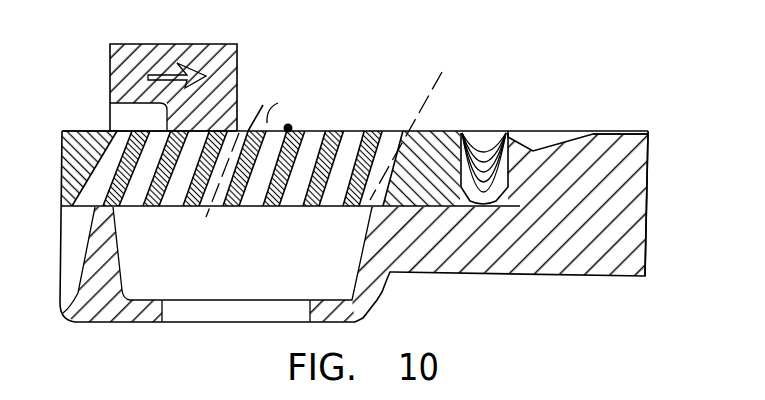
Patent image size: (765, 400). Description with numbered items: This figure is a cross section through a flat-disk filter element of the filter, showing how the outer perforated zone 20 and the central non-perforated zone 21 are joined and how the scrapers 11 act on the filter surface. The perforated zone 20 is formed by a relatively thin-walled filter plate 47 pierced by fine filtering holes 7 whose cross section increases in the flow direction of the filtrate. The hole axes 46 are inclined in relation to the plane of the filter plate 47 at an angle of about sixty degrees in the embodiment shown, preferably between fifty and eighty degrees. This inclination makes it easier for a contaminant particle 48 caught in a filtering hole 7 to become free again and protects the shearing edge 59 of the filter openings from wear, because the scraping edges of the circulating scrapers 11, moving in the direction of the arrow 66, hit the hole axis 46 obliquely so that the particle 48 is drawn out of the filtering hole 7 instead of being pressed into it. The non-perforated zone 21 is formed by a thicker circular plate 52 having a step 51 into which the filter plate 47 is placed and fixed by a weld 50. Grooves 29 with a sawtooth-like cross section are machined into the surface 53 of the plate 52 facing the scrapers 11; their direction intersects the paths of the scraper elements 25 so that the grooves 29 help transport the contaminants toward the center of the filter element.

The filtering holes 7 is at (316, 133).
The scrapers 11 is at (248, 52).
The perforated zone 20 is at (171, 261).
The non-perforated zone 21 is at (528, 304).
The scraper elements 25 is at (110, 72).
The grooves 29 is at (535, 137).
The hole axes 46 is at (412, 84).
The filter plate 47 is at (60, 182).
The contaminant particle 48 is at (289, 126).
The weld 50 is at (477, 131).
The step 51 is at (395, 218).
The circular plate 52 is at (618, 152).
The surface 53 is at (649, 120).
The shearing edge 59 is at (369, 122).
The arrow 66 is at (173, 73).